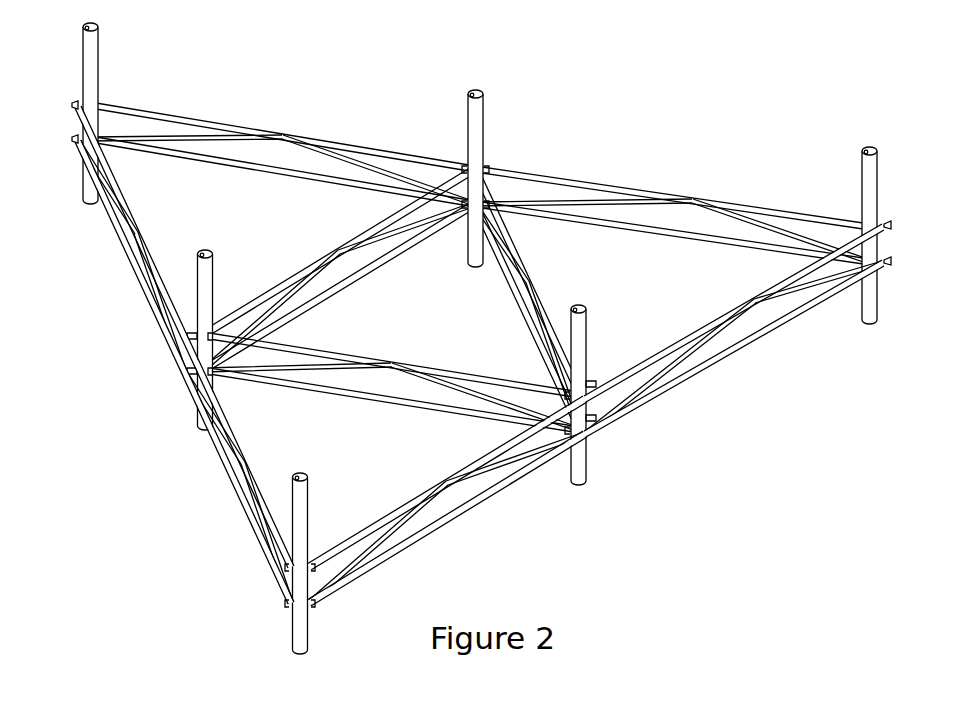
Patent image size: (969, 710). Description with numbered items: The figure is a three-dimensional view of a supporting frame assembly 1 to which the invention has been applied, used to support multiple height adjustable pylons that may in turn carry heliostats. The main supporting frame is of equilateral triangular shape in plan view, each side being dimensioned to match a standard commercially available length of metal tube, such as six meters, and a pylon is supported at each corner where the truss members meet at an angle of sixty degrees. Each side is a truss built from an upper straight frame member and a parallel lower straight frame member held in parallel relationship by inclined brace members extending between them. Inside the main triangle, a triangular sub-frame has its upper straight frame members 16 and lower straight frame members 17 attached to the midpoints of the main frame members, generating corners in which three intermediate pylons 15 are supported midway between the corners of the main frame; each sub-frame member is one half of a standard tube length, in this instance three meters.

The supporting frame assembly 1 is at (481, 338).
The intermediate pylon 15 is at (478, 125).
The upper straight frame member of sub-frame 16 is at (278, 273).
The lower straight frame member of sub-frame 17 is at (393, 247).